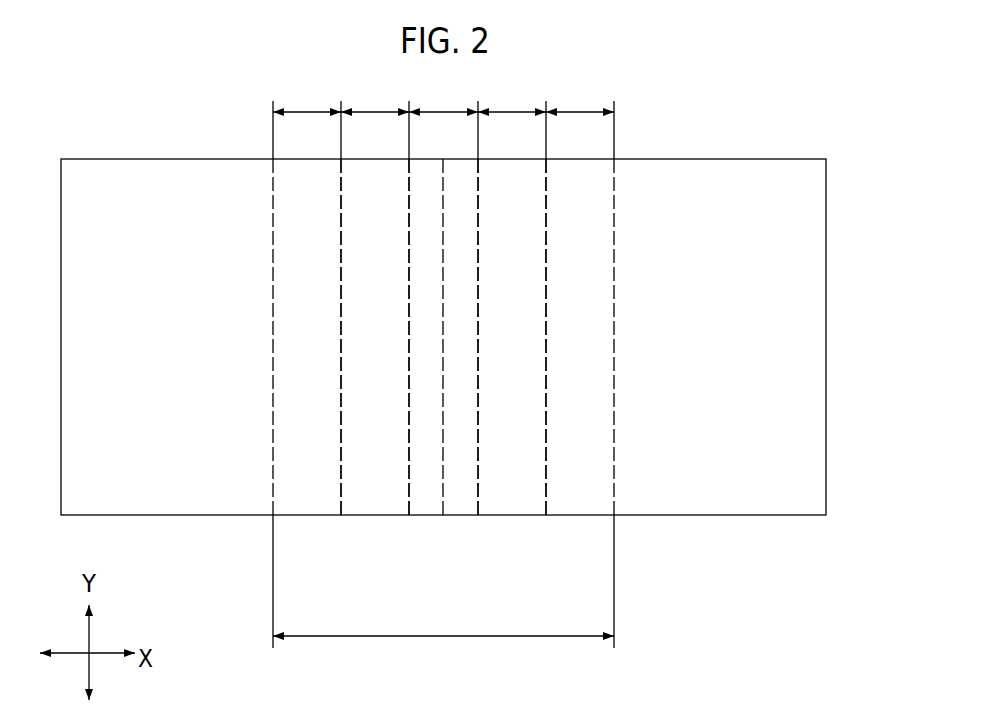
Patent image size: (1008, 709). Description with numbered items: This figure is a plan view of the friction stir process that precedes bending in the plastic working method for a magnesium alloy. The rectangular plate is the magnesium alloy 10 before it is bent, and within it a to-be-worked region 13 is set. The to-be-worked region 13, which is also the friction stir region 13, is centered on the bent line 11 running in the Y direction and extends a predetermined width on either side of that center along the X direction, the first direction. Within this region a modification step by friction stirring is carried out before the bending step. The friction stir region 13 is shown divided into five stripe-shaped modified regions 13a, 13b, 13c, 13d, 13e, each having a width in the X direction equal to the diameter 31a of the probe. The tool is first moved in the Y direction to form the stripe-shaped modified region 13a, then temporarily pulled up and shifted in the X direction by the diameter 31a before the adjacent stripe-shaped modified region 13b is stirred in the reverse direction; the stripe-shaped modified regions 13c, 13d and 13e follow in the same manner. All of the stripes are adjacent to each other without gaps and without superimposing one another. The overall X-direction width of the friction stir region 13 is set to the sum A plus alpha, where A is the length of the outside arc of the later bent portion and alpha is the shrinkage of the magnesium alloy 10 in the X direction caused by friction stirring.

The magnesium alloy 10 is at (815, 366).
The bent line 11 is at (444, 478).
The to-be-worked region 13 is at (550, 638).
The stripe-shaped modified region 13a is at (310, 503).
The stripe-shaped modified region 13b is at (367, 503).
The stripe-shaped modified region 13c is at (430, 503).
The stripe-shaped modified region 13d is at (507, 503).
The stripe-shaped modified region 13e is at (578, 503).
The diameter 31a is at (443, 119).